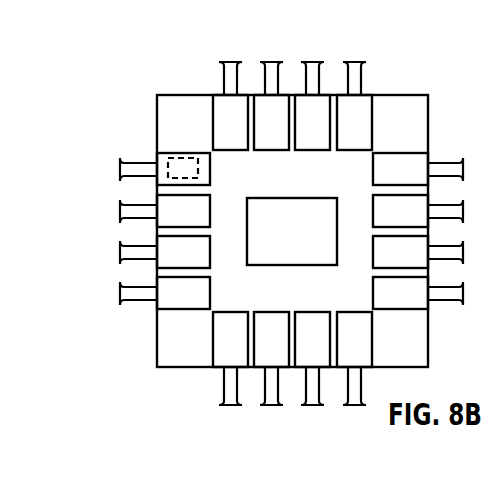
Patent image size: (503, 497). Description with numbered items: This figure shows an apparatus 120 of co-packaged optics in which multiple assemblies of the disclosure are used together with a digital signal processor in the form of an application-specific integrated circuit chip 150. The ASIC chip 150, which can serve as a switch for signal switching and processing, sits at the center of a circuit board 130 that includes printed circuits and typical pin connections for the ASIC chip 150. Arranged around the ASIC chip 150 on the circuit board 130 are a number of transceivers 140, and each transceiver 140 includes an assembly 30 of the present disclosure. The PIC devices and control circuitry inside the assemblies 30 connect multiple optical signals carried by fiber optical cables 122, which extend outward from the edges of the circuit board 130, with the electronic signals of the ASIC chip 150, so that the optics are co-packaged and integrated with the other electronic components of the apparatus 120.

The apparatus 120 is at (188, 51).
The fiber optical cable 122 is at (362, 80).
The assembly 30 is at (178, 159).
The transceiver 140 is at (182, 186).
The circuit board 130 is at (180, 341).
The application-specific integrated circuit chip 150 is at (296, 197).